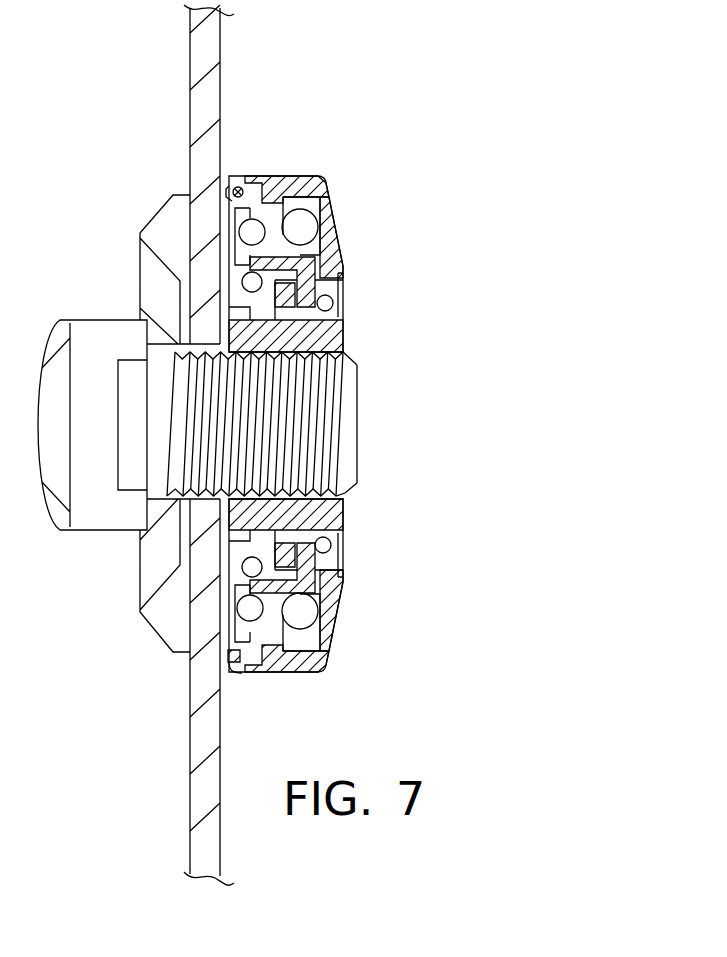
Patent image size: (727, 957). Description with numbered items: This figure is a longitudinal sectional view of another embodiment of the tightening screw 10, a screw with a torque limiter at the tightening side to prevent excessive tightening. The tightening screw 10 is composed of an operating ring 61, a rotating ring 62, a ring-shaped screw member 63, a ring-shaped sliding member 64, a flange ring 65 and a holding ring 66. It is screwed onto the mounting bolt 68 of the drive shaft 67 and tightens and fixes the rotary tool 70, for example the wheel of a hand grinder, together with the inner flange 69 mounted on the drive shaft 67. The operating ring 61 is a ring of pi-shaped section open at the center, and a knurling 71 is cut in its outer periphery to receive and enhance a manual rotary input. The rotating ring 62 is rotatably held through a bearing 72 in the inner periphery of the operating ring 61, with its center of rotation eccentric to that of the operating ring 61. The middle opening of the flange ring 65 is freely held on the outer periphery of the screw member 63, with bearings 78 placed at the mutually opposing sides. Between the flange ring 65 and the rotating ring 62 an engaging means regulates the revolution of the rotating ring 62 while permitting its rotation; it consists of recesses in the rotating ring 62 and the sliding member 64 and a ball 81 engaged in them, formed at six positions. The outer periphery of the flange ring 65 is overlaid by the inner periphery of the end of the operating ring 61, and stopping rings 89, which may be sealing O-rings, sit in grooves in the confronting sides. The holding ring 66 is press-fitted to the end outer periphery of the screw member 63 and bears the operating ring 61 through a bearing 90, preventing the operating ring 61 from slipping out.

The tightening screw 10 is at (357, 130).
The operating ring 61 is at (328, 212).
The rotating ring 62 is at (328, 268).
The ring-shaped screw member 63 is at (343, 336).
The ring-shaped sliding member 64 is at (268, 198).
The flange ring 65 is at (230, 221).
The holding ring 66 is at (345, 294).
The drive shaft 67 is at (80, 330).
The mounting bolt 68 is at (353, 413).
The inner flange 69 is at (141, 233).
The rotary tool 70 is at (190, 58).
The knurling 71 is at (300, 177).
The bearing 72 is at (312, 612).
The bearings 78 is at (250, 567).
The ball 81 is at (268, 632).
The stopping rings 89 is at (235, 664).
The bearing 90 is at (338, 539).